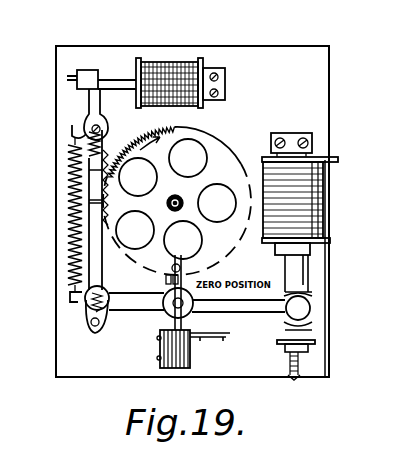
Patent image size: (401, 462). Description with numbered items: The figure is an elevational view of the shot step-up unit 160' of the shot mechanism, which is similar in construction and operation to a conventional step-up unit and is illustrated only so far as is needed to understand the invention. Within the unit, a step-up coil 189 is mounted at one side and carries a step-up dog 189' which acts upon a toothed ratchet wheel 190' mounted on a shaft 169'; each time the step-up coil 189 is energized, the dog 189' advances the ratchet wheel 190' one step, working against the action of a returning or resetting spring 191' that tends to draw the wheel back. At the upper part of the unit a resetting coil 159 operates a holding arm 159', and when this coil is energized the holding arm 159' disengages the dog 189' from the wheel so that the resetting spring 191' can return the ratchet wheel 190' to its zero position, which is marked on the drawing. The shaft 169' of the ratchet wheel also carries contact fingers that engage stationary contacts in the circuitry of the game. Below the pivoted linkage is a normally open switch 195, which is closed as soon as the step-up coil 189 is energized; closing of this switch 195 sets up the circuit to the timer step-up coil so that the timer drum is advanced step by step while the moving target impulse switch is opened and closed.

The resetting coil 159 is at (180, 65).
The holding arm 159' is at (49, 215).
The shot step-up unit 160' is at (220, 211).
The shaft 169' is at (208, 185).
The step-up coil 189 is at (316, 256).
The step-up dog 189' is at (57, 286).
The ratchet wheel 190' is at (191, 191).
The resetting spring 191' is at (183, 235).
The normally open switch 195 is at (165, 318).